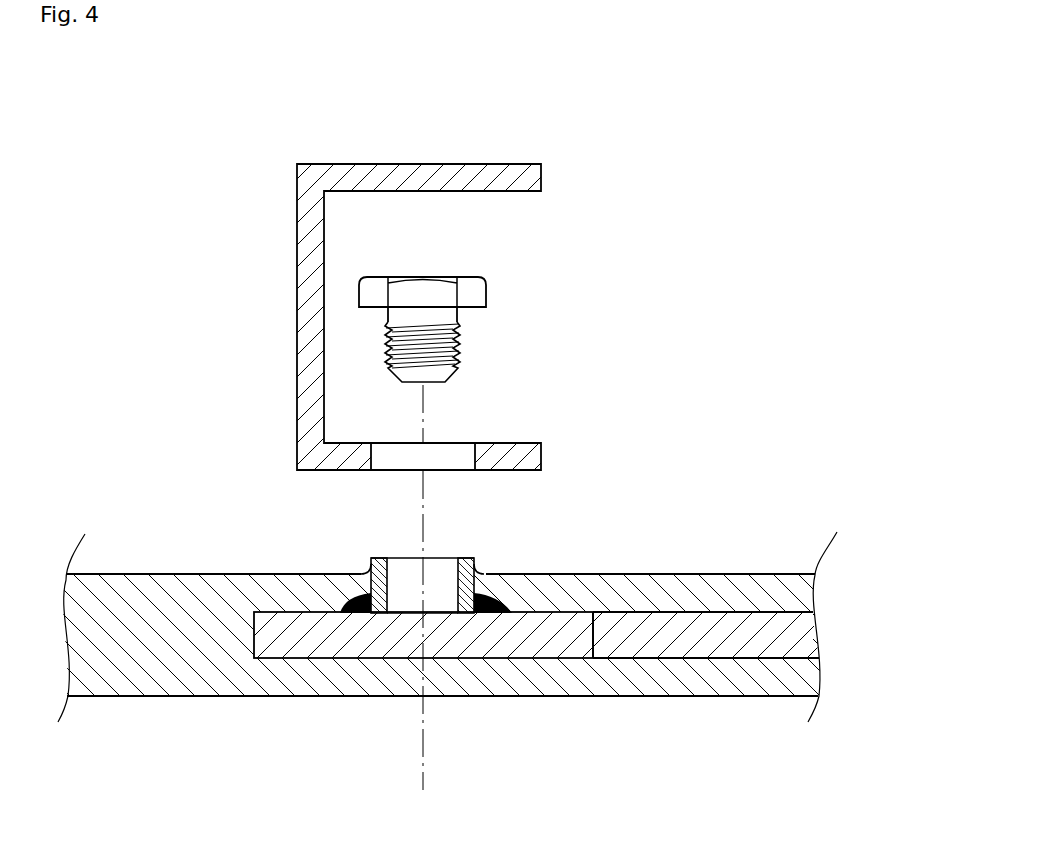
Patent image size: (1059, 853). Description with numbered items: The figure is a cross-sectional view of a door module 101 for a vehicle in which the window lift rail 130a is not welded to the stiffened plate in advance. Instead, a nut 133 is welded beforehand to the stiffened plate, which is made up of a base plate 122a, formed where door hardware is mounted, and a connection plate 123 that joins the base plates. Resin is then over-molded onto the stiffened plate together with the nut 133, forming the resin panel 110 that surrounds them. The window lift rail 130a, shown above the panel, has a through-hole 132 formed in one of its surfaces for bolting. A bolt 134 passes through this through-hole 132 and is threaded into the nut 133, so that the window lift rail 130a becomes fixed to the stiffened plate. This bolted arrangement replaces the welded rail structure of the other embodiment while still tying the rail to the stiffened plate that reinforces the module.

The door module 101 is at (662, 148).
The window lift rail 130a is at (418, 163).
The through-hole 132 is at (475, 453).
The bolt 134 is at (488, 293).
The nut 133 is at (477, 562).
The resin panel 110 is at (195, 676).
The base plate 122a is at (317, 637).
The connection plate 123 is at (687, 637).